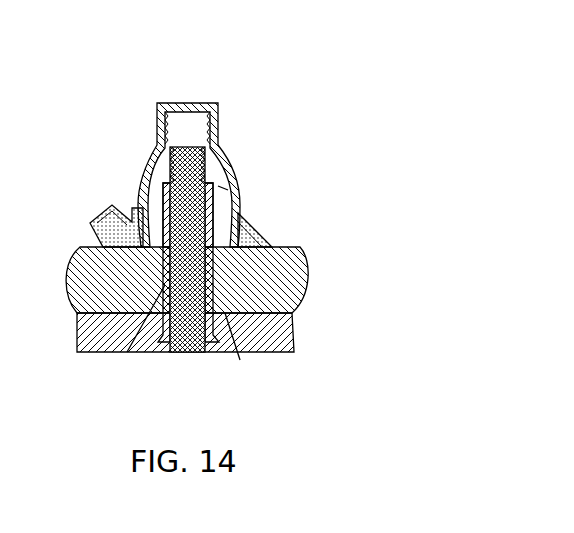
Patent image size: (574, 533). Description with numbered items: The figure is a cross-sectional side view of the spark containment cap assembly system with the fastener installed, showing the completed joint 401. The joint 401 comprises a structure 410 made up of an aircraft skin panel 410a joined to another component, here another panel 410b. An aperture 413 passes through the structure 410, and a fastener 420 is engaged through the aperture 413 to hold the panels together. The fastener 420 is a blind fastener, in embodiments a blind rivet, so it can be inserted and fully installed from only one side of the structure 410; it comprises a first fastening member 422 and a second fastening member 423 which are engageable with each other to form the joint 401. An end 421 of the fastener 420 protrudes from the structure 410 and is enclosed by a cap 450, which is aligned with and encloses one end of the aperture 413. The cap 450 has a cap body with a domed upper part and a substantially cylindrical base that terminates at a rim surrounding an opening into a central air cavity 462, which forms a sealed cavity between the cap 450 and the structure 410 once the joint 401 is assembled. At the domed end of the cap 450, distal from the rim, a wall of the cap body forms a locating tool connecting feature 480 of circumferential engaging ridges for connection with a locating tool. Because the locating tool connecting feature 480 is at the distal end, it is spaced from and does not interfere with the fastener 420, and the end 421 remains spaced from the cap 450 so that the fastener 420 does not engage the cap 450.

The joint 401 is at (289, 85).
The structure 410 is at (196, 290).
The aircraft skin panel 410a is at (288, 335).
The panel 410b is at (290, 272).
The aperture 413 is at (235, 330).
The fastener 420 is at (183, 343).
The end of the fastener 421 is at (173, 160).
The first fastening member 422 is at (160, 200).
The second fastening member 423 is at (127, 352).
The cap 450 is at (232, 157).
The central air cavity 462 is at (225, 188).
The locating tool connecting feature 480 is at (216, 104).